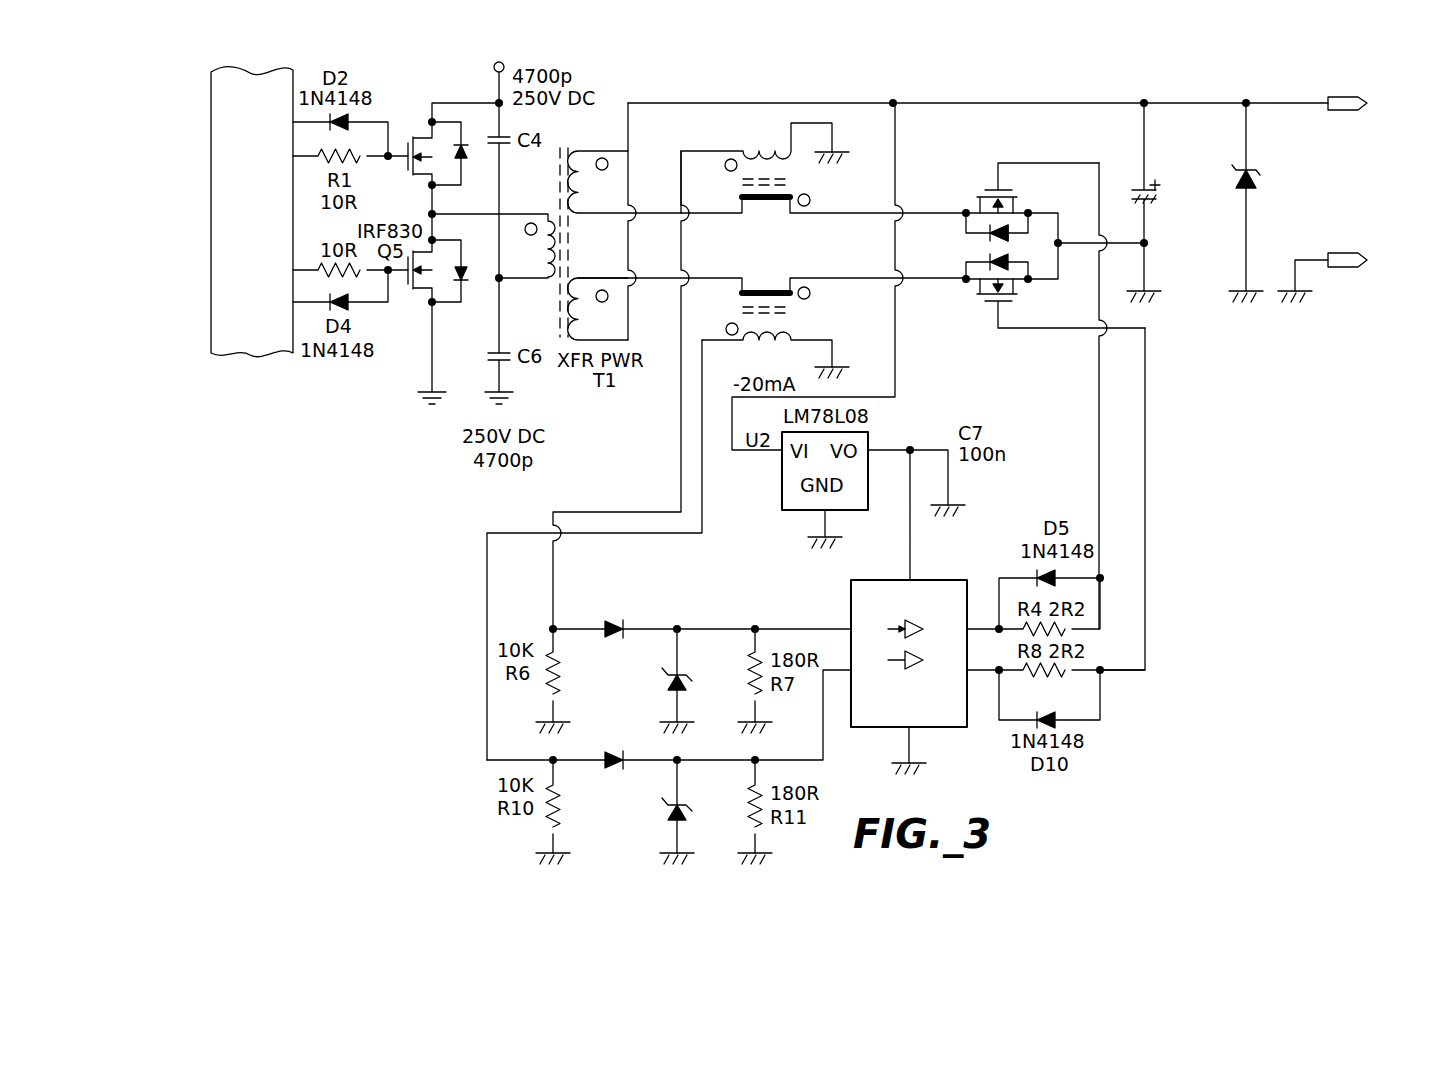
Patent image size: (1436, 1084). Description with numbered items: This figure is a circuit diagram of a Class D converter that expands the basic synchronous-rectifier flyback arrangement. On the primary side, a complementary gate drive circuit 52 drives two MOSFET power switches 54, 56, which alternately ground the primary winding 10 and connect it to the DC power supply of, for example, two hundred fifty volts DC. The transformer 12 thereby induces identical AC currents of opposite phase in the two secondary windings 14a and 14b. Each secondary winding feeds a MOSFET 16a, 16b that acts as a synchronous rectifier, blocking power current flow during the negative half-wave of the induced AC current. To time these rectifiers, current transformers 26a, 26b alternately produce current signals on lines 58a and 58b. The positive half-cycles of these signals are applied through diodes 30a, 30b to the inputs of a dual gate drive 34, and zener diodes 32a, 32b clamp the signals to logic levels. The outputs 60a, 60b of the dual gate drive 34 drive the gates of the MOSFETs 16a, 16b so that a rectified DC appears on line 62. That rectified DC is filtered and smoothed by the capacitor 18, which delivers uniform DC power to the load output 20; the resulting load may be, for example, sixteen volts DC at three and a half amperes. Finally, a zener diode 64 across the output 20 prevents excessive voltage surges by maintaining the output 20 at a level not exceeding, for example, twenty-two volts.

The primary winding 10 is at (547, 238).
The transformer 12 is at (563, 142).
The secondary winding 14a is at (578, 173).
The secondary winding 14b is at (578, 318).
The MOSFET 16a is at (966, 225).
The MOSFET 16b is at (966, 273).
The capacitor 18 is at (1132, 185).
The load output 20 is at (1374, 102).
The current transformer 26a is at (796, 179).
The current transformer 26b is at (796, 311).
The diode 30a is at (615, 620).
The diode 30b is at (615, 752).
The zener diode 32a is at (682, 668).
The zener diode 32b is at (682, 800).
The dual gate drive 34 is at (940, 714).
The complementary gate drive circuit 52 is at (278, 205).
The MOSFET power switch 54 is at (443, 173).
The MOSFET power switch 56 is at (443, 290).
The line 58a is at (681, 432).
The line 58b is at (703, 515).
The output 60a is at (1099, 408).
The output 60b is at (1145, 515).
The line 62 is at (722, 103).
The zener diode 64 is at (1258, 174).